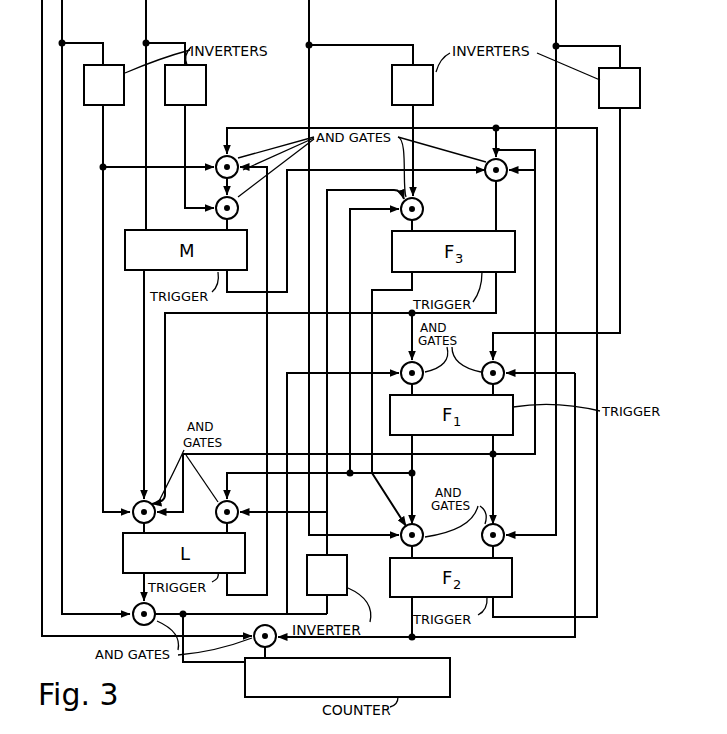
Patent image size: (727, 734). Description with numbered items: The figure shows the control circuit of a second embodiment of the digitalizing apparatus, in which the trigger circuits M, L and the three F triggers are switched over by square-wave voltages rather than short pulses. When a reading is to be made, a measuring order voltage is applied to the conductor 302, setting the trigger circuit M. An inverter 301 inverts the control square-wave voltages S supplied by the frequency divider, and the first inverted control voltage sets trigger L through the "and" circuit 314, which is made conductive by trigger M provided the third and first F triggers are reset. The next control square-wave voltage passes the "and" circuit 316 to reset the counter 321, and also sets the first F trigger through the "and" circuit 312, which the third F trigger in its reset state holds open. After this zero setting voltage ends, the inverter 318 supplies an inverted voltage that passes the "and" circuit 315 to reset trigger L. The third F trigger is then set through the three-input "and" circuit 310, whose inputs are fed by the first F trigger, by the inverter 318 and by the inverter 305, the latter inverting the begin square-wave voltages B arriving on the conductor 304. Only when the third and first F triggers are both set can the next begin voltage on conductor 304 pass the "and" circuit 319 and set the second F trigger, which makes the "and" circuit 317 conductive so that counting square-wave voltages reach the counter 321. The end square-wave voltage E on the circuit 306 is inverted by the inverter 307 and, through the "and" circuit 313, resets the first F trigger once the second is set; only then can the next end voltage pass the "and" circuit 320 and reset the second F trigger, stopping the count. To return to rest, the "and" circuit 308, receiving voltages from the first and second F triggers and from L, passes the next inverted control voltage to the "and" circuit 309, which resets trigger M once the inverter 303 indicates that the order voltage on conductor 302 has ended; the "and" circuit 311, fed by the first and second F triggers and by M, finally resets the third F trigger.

The inverter 301 is at (104, 85).
The conductor 302 is at (165, 115).
The inverter 303 is at (185, 85).
The conductor 304 is at (360, 267).
The inverter 305 is at (412, 85).
The circuit 306 is at (563, 267).
The inverter 307 is at (619, 88).
The "and" circuit 308 is at (213, 160).
The "and" circuit 309 is at (213, 201).
The "and" circuit 310 is at (429, 209).
The "and" circuit 311 is at (482, 178).
The "and" circuit 312 is at (426, 366).
The "and" circuit 313 is at (482, 366).
The "and" circuit 314 is at (131, 505).
The "and" circuit 315 is at (214, 517).
The "and" circuit 316 is at (159, 610).
The "and" circuit 317 is at (281, 642).
The inverter 318 is at (327, 575).
The "and" circuit 319 is at (427, 530).
The "and" circuit 320 is at (507, 530).
The counter 321 is at (347, 677).